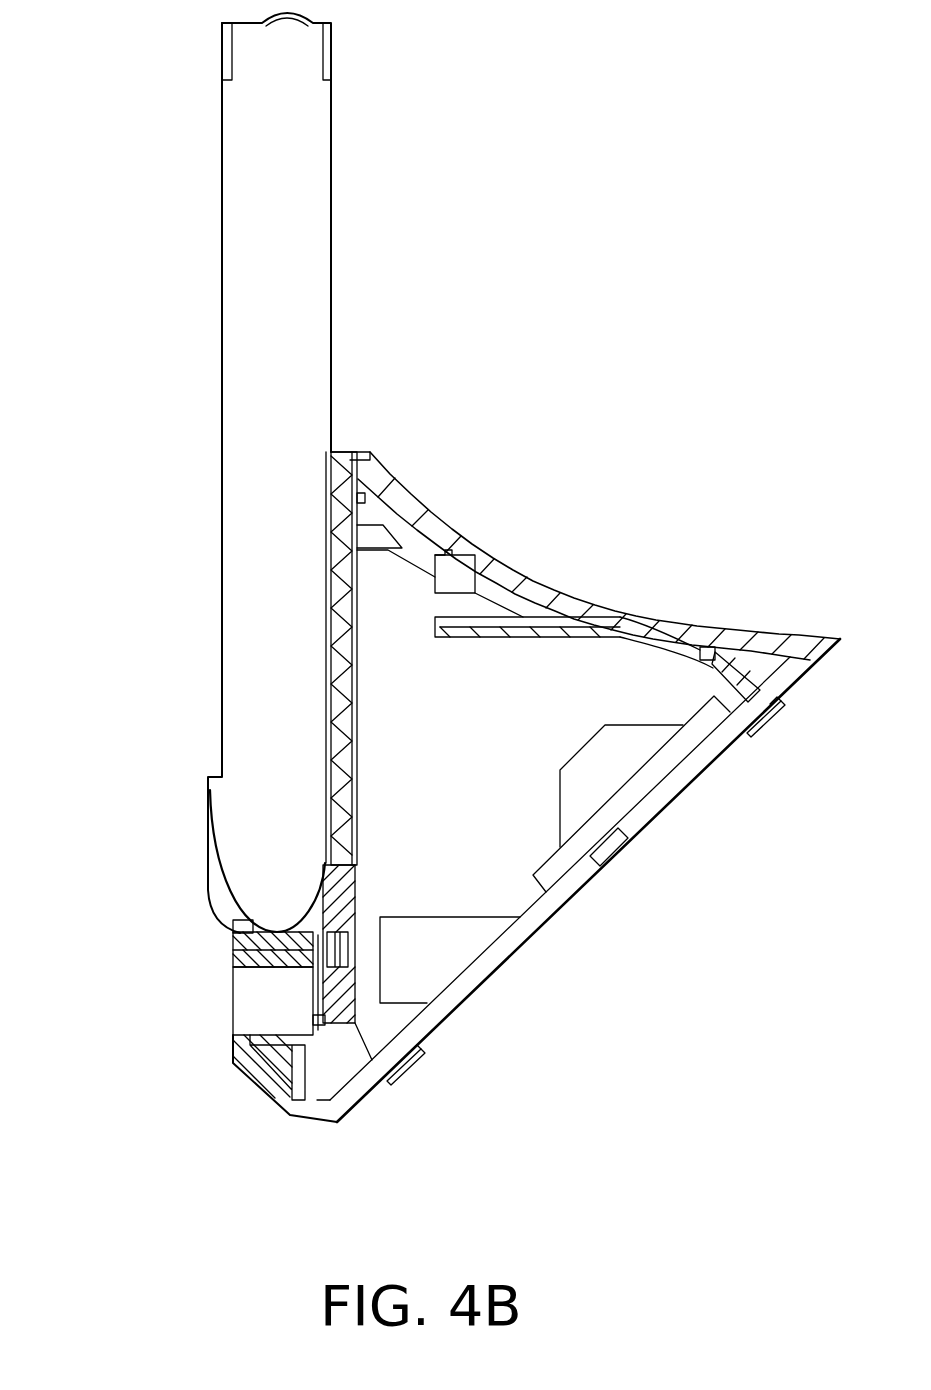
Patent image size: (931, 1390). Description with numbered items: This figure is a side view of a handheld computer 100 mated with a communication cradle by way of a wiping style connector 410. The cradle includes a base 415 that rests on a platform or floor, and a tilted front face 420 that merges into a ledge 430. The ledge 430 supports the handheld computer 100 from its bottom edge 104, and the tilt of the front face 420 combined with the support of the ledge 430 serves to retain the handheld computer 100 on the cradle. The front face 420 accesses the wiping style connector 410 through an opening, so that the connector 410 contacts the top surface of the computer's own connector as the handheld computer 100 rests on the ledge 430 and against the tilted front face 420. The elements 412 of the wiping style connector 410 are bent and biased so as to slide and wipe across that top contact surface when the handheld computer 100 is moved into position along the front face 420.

The handheld computer 100 is at (180, 222).
The bottom edge 104 is at (235, 932).
The wiping style connector 410 is at (345, 882).
The elements of the wiping style connector 412 is at (330, 831).
The base 415 is at (712, 768).
The tilted front face 420 is at (363, 517).
The ledge 430 is at (235, 960).